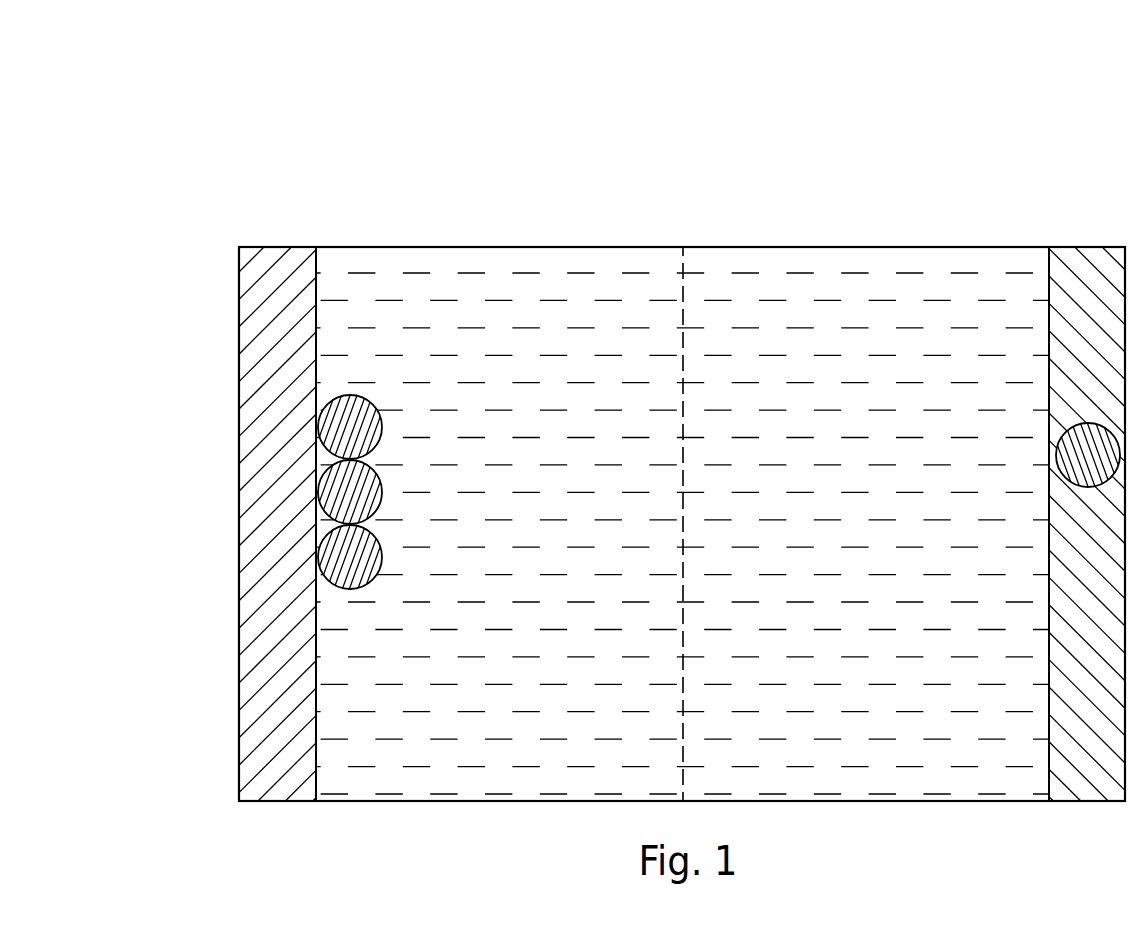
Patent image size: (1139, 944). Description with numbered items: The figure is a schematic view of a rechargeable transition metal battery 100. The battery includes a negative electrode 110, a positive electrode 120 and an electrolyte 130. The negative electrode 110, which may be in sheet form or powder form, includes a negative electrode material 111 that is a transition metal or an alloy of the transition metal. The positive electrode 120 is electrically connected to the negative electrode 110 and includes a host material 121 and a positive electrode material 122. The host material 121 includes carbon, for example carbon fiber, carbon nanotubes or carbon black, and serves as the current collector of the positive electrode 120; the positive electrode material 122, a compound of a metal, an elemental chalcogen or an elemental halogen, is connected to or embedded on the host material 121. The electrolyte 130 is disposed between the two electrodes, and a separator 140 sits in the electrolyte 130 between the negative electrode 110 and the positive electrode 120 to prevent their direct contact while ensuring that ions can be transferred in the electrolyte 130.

The rechargeable transition metal battery 100 is at (113, 41).
The negative electrode 110 is at (1088, 309).
The negative electrode material 111 is at (1085, 455).
The positive electrode 120 is at (278, 140).
The host material 121 is at (281, 304).
The positive electrode material 122 is at (350, 427).
The electrolyte 130 is at (818, 318).
The separator 140 is at (681, 317).